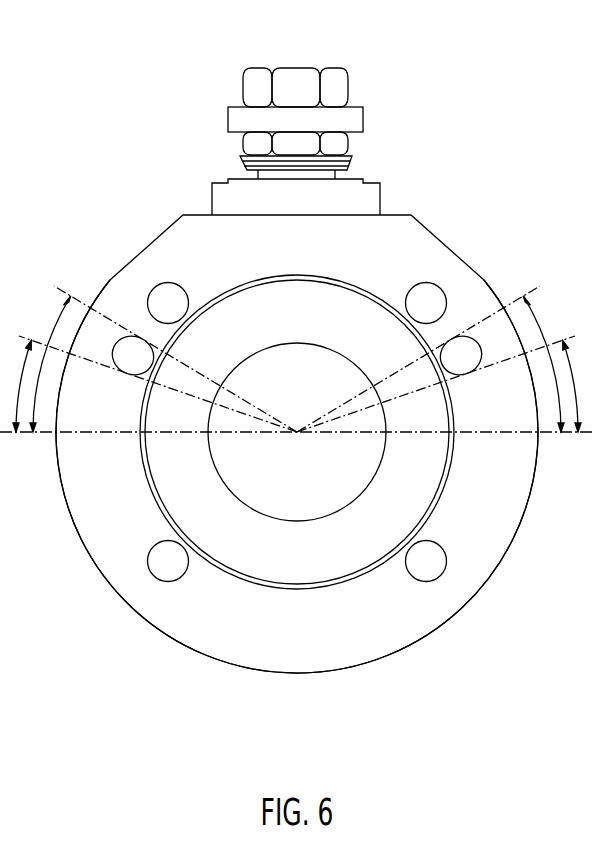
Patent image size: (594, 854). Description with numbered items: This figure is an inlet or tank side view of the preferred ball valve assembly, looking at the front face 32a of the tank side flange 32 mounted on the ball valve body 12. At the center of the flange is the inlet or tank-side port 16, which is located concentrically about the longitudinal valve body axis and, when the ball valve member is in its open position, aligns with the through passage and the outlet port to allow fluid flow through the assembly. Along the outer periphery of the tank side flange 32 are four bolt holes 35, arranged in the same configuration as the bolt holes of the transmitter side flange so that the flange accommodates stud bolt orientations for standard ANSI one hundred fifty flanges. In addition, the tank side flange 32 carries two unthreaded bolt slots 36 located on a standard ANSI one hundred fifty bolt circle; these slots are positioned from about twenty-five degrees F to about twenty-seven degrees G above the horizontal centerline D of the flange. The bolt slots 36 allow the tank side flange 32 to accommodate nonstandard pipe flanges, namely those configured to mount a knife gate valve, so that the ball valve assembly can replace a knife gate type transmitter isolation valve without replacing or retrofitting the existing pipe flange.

The ball valve body 12 is at (163, 190).
The inlet or tank-side port 16 is at (248, 472).
The tank side flange 32 is at (367, 680).
The front face of the tank side flange 32a is at (253, 632).
The bolt holes 35 is at (168, 297).
The bolt slots 36 is at (140, 323).
The horizontal centerline D is at (543, 433).
The angle of about twenty-five degrees F is at (297, 387).
The angle of about twenty-seven degrees G is at (297, 359).